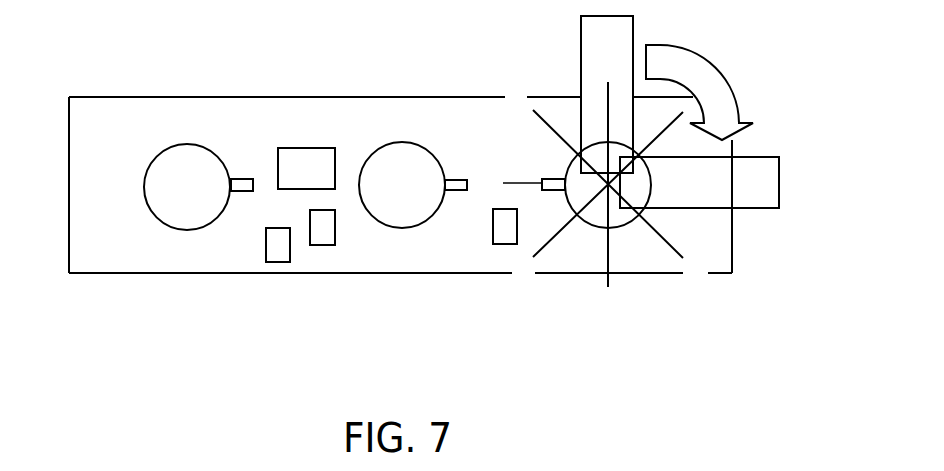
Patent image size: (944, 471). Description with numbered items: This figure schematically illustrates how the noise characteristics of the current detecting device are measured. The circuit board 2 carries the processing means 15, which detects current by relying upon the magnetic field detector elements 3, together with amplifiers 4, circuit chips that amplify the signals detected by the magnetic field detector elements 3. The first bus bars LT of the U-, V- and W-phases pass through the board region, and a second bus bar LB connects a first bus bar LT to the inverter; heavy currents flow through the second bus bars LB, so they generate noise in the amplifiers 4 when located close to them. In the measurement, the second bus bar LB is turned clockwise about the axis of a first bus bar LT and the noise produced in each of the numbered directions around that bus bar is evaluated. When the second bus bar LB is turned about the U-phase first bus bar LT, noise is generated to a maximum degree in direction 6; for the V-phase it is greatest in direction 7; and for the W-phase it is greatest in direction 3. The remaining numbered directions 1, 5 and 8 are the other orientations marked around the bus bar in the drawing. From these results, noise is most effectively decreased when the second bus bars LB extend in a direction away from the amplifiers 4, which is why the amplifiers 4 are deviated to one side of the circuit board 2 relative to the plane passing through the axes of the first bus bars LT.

The beam source / laser unit 1 is at (607, 94).
The circuit board 2 is at (273, 113).
The magnetic field detector element 3 is at (240, 183).
The amplifier 4 is at (278, 255).
The vertical measuring line 5 is at (608, 203).
The direction 6 is at (400, 273).
The direction 7 is at (511, 186).
The upper edge line 8 is at (381, 97).
The processing means 15 is at (315, 162).
The first bus bar LT is at (187, 155).
The second bus bar LB is at (581, 52).